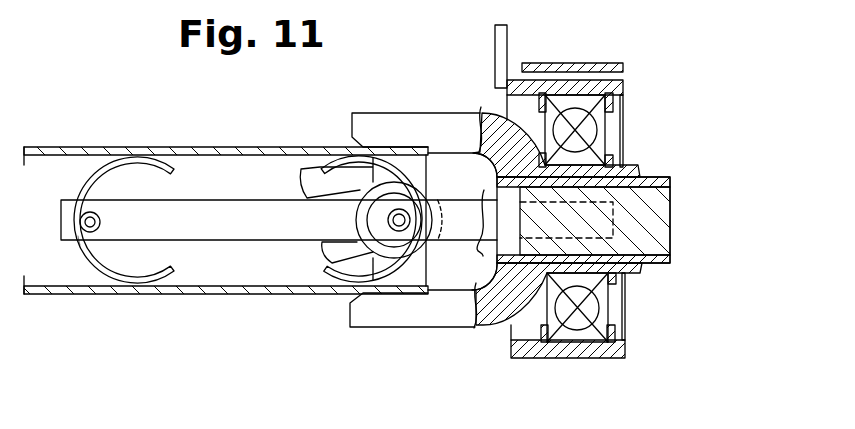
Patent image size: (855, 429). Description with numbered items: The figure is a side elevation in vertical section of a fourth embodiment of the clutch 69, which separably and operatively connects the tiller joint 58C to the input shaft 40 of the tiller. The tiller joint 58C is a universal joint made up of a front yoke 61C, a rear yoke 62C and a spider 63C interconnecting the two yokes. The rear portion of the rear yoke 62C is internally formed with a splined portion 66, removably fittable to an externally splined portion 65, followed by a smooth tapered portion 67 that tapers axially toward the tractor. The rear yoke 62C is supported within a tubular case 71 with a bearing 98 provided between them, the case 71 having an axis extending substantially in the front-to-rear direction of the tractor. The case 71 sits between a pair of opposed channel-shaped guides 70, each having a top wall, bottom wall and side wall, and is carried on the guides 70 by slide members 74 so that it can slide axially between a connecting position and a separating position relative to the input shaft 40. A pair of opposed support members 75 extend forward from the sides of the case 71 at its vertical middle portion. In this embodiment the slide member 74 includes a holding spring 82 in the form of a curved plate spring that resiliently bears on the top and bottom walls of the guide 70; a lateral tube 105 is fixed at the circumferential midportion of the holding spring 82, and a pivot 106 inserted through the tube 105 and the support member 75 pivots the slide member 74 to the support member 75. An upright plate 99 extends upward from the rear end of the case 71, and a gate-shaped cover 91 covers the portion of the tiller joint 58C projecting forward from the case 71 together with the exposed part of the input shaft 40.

The input shaft 40 is at (647, 184).
The tiller joint 58C is at (437, 110).
The front yoke 61C is at (315, 170).
The rear yoke 62C is at (380, 114).
The spider 63C is at (403, 286).
The externally splined portion 65 is at (628, 182).
The splined portion 66 is at (518, 258).
The tapered portion 67 is at (642, 273).
The clutch 69 is at (262, 303).
The guide 70 is at (52, 295).
The tubular case 71 is at (567, 350).
The slide member 74 is at (82, 173).
The support member 75 is at (256, 206).
The holding spring 82 is at (80, 256).
The gate-shaped cover 91 is at (570, 62).
The bearing 98 is at (583, 320).
The upright plate 99 is at (503, 45).
The lateral tube 105 is at (103, 219).
The pivot 106 is at (93, 231).